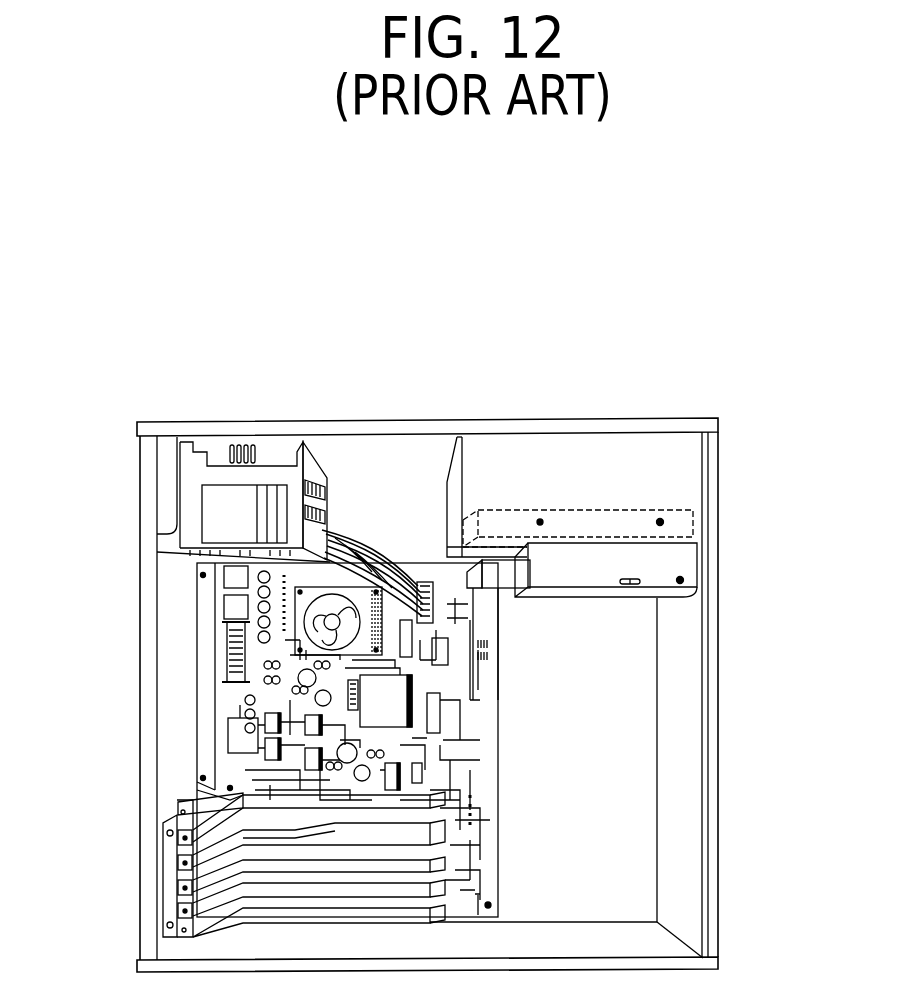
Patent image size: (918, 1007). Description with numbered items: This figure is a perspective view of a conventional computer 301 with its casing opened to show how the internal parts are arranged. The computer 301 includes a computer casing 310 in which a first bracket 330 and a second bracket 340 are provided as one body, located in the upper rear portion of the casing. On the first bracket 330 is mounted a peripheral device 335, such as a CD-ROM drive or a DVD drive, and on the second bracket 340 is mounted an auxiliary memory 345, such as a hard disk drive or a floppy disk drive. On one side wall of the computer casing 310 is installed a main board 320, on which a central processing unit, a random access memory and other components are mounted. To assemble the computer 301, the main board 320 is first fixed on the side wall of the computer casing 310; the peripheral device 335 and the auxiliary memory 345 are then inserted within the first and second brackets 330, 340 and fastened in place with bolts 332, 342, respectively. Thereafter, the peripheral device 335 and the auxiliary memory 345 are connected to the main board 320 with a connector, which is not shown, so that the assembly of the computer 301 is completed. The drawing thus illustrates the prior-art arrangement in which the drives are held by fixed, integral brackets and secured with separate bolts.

The computer 301 is at (431, 648).
The computer casing 310 is at (140, 648).
The main board 320 is at (498, 781).
The first bracket 330 is at (692, 449).
The bolt 332 is at (660, 522).
The peripheral device 335 is at (660, 522).
The second bracket 340 is at (693, 567).
The bolt 342 is at (680, 580).
The auxiliary memory 345 is at (507, 583).